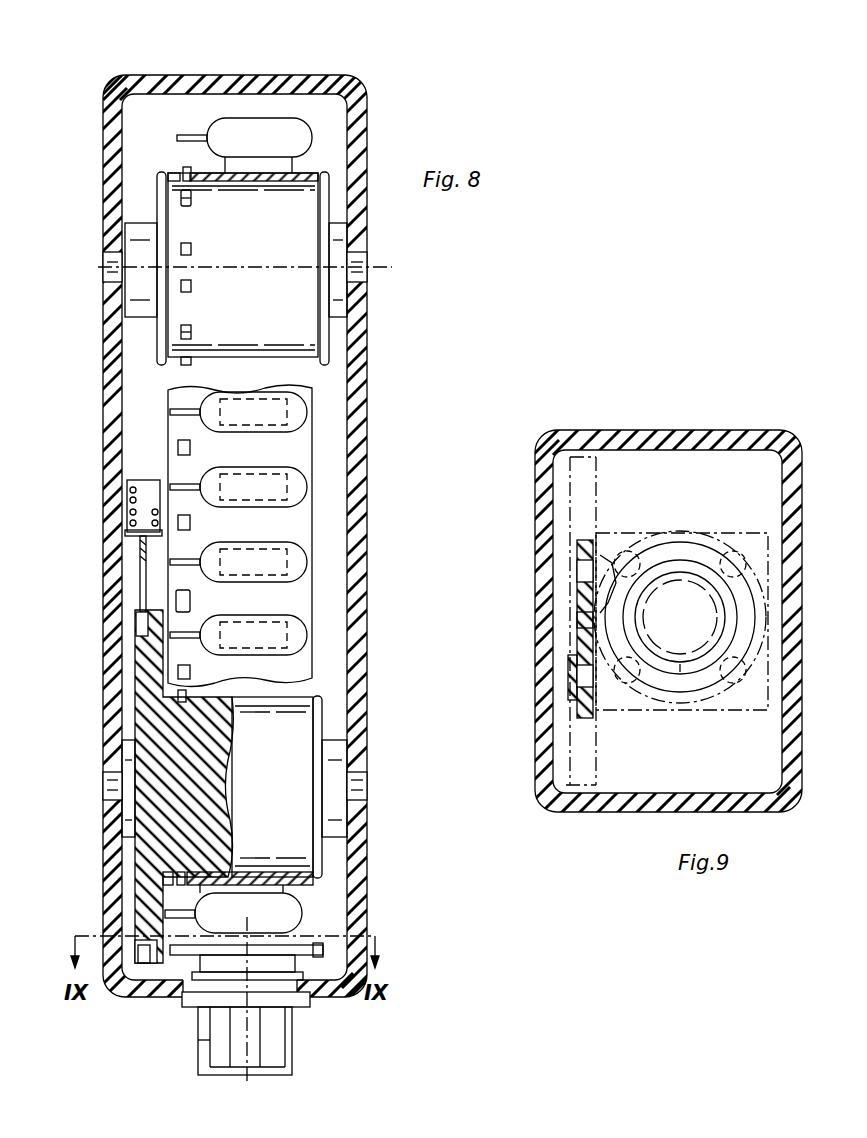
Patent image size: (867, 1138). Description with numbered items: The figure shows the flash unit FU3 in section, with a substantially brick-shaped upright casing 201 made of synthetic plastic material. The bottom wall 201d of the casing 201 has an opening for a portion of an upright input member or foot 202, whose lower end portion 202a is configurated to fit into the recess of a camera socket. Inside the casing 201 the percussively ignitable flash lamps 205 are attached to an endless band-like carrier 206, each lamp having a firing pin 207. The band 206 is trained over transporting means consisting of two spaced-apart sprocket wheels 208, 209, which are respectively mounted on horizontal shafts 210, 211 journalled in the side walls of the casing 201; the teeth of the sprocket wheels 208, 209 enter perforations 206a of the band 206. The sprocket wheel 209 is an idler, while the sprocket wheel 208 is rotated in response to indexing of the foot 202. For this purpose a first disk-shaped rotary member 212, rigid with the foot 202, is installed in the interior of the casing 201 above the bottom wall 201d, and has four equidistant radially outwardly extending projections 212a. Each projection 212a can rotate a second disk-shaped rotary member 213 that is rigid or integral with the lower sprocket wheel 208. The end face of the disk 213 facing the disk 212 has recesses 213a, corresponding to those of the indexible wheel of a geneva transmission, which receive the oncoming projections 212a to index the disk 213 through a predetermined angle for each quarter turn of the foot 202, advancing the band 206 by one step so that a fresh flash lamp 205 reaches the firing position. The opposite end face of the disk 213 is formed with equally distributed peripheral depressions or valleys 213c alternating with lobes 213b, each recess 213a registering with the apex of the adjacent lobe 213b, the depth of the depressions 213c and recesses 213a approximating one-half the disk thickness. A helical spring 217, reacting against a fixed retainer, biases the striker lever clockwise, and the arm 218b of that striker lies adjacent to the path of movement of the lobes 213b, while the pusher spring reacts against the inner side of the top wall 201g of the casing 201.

In FIG. 8, the casing 201 is at (365, 187).
In FIG. 9, the casing 201 is at (803, 448).
In FIG. 8, the top wall 201g is at (268, 76).
In FIG. 8, the bottom wall 201d is at (166, 1000).
In FIG. 8, the flash unit FU3 is at (365, 83).
In FIG. 9, the flash unit FU3 is at (663, 425).
In FIG. 8, the input member or foot 202 is at (228, 968).
In FIG. 9, the input member or foot 202 is at (681, 683).
In FIG. 8, the lower end portion 202a is at (280, 1040).
In FIG. 8, the flash lamp 205 is at (305, 135).
In FIG. 8, the endless band-like carrier 206 is at (305, 435).
In FIG. 8, the perforations 206a is at (190, 448).
In FIG. 8, the firing pin 207 is at (200, 138).
In FIG. 8, the sprocket wheel 208 is at (308, 722).
In FIG. 8, the sprocket wheel 209 is at (310, 345).
In FIG. 8, the horizontal shaft 210 is at (353, 790).
In FIG. 8, the horizontal shaft 211 is at (350, 262).
In FIG. 8, the first disk-shaped rotary member 212 is at (307, 958).
In FIG. 9, the first disk-shaped rotary member 212 is at (693, 547).
In FIG. 8, the projections 212a is at (320, 948).
In FIG. 9, the projections 212a is at (622, 550).
In FIG. 8, the second disk-shaped rotary member 213 is at (160, 880).
In FIG. 9, the second disk-shaped rotary member 213 is at (572, 748).
In FIG. 8, the recesses 213a is at (150, 960).
In FIG. 9, the recesses 213a is at (608, 553).
In FIG. 9, the lobes 213b is at (577, 572).
In FIG. 8, the depressions or valleys 213c is at (143, 625).
In FIG. 9, the depressions or valleys 213c is at (577, 622).
In FIG. 8, the helical spring 217 is at (143, 482).
In FIG. 8, the arm 218b is at (145, 583).